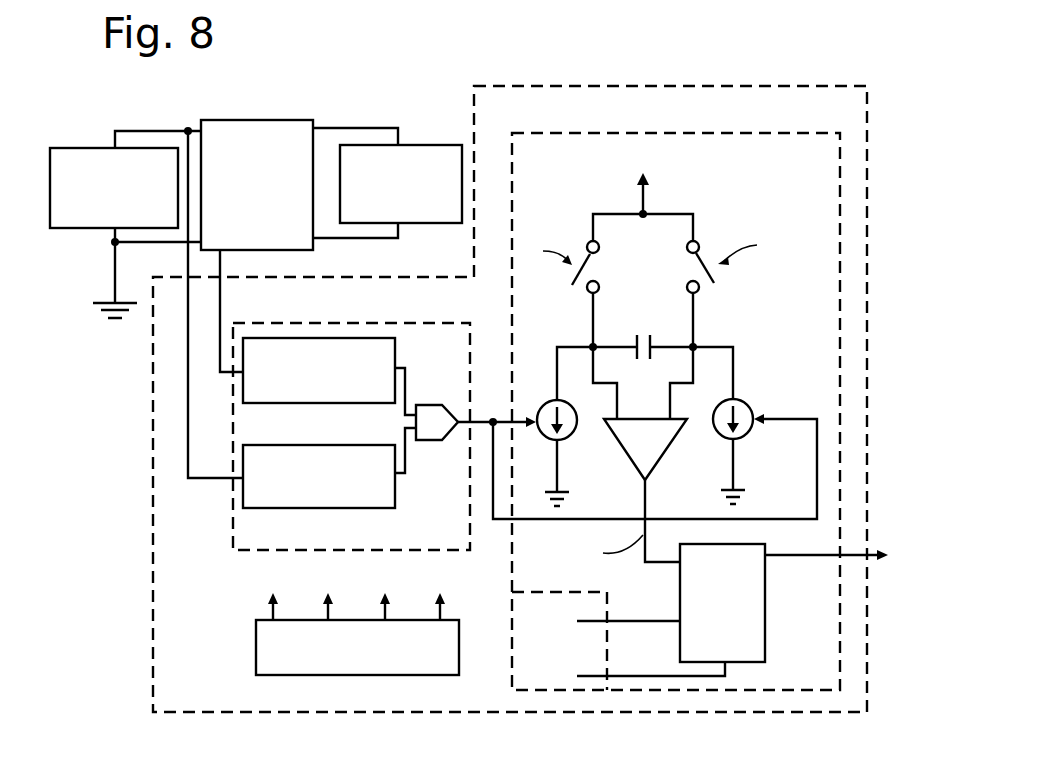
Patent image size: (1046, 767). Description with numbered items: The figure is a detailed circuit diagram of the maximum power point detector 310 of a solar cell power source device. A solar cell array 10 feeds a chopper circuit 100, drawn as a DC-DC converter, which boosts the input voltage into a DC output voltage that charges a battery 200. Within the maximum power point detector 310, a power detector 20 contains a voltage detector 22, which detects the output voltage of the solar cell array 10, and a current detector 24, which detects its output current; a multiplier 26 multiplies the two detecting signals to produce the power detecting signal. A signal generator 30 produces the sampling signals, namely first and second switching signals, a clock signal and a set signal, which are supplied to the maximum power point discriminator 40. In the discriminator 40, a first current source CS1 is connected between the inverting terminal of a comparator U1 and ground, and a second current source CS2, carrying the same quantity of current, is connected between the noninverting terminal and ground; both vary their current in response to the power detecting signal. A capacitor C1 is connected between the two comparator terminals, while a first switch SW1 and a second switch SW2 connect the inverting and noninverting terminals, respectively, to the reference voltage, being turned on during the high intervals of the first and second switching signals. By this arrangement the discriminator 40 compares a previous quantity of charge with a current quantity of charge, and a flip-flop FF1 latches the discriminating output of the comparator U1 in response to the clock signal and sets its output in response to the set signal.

The solar cell array 10 is at (72, 148).
The chopper circuit 100 is at (273, 120).
The battery 200 is at (420, 146).
The power detector 20 is at (368, 323).
The voltage detector 22 is at (331, 509).
The current detector 24 is at (330, 404).
The multiplier 26 is at (423, 403).
The signal generator 30 is at (256, 652).
The maximum power point discriminator 40 is at (692, 132).
The maximum power point detector 310 is at (868, 112).
The first switch SW1 is at (606, 267).
The second switch SW2 is at (682, 267).
The capacitor C1 is at (643, 342).
The first current source CS1 is at (574, 432).
The second current source CS2 is at (748, 433).
The comparator U1 is at (657, 460).
The flip-flop FF1 is at (722, 603).